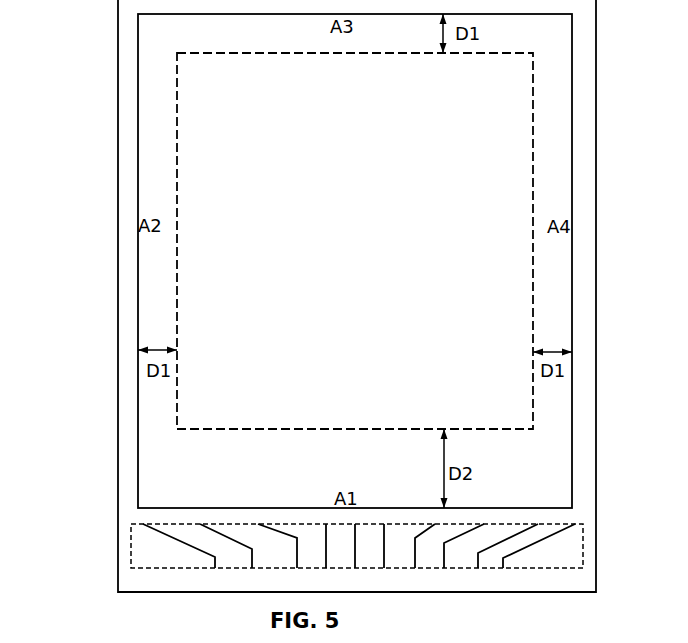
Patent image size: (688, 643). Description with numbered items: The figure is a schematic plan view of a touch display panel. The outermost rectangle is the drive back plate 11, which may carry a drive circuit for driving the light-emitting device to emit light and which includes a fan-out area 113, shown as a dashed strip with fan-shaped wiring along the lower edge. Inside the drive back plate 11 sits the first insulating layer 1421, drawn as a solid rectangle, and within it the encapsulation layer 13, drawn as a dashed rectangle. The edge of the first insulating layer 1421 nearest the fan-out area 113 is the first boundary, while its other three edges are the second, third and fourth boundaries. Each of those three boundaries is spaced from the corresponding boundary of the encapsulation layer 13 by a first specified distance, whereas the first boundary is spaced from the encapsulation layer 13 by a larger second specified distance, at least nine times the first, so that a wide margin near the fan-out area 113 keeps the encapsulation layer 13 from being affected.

The drive back plate 11 is at (108, 54).
The encapsulation layer 13 is at (167, 163).
The first insulating layer 1421 is at (128, 261).
The fan-out area 113 is at (121, 547).